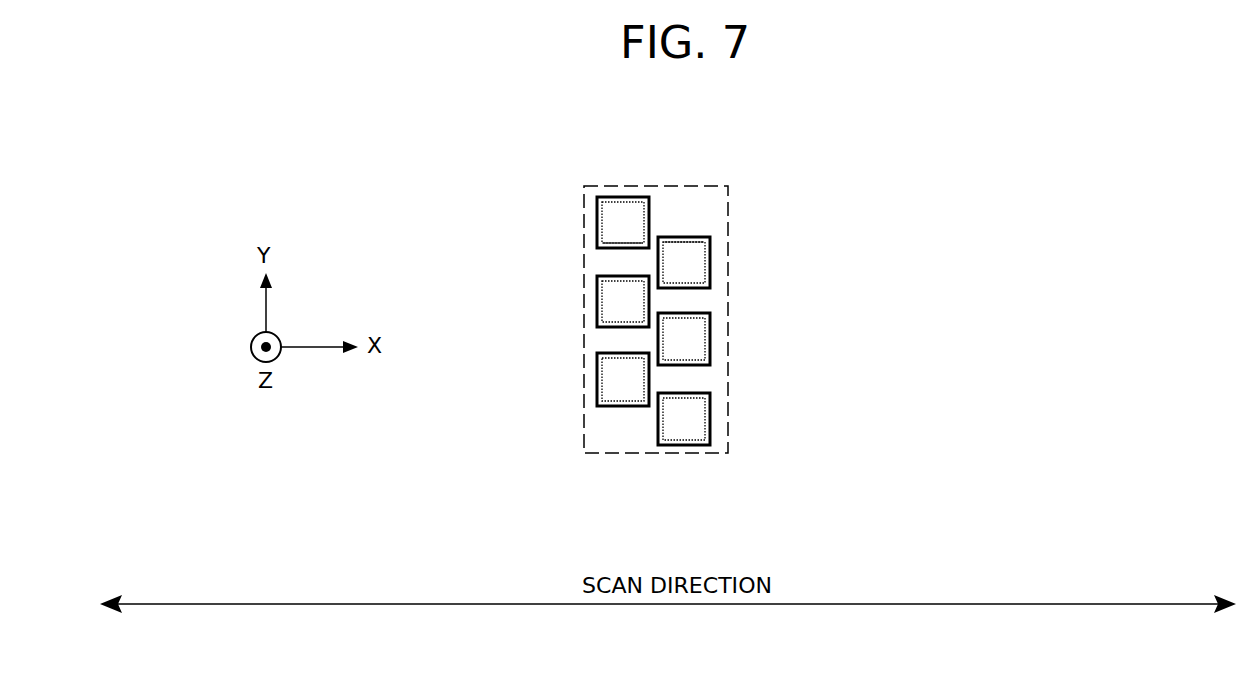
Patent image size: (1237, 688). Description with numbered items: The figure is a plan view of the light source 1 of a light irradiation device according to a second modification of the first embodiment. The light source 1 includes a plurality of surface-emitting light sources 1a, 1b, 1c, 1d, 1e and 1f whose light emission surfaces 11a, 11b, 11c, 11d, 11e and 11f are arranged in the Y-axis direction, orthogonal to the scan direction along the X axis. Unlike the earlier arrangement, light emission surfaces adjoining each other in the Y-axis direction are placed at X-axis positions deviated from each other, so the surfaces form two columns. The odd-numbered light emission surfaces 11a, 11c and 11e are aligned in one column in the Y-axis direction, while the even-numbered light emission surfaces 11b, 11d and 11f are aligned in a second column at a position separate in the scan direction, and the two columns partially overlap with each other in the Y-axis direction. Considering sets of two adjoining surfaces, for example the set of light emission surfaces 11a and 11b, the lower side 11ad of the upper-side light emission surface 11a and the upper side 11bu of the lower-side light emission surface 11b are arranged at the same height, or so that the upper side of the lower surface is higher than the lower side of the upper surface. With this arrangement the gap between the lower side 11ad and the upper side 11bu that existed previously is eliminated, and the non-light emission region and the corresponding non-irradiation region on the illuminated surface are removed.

The light source 1 is at (648, 186).
The surface-emitting light source 1a is at (615, 212).
The light emission surface 11a is at (598, 197).
The lower side of light emission surface 11ad is at (620, 243).
The surface-emitting light source 1b is at (709, 243).
The light emission surface 11b is at (697, 263).
The upper side of light emission surface 11bu is at (680, 242).
The surface-emitting light source 1c is at (597, 287).
The light emission surface 11c is at (610, 310).
The surface-emitting light source 1d is at (709, 325).
The light emission surface 11d is at (709, 343).
The surface-emitting light source 1e is at (597, 363).
The light emission surface 11e is at (612, 385).
The surface-emitting light source 1f is at (709, 405).
The light emission surface 11f is at (709, 420).